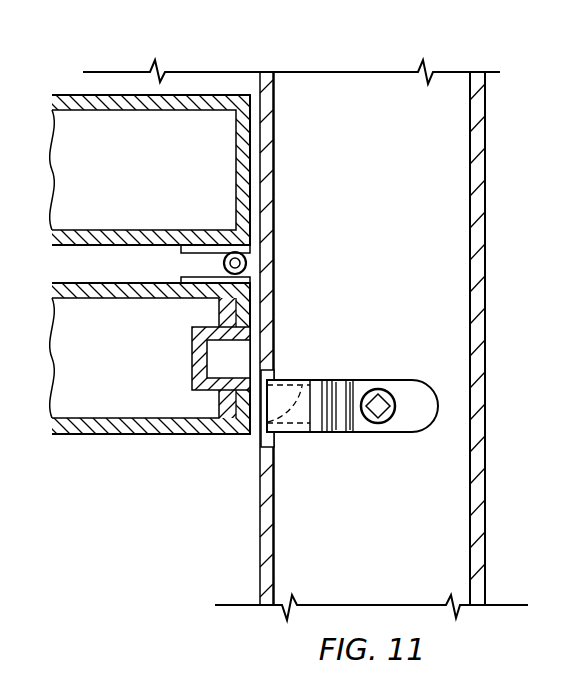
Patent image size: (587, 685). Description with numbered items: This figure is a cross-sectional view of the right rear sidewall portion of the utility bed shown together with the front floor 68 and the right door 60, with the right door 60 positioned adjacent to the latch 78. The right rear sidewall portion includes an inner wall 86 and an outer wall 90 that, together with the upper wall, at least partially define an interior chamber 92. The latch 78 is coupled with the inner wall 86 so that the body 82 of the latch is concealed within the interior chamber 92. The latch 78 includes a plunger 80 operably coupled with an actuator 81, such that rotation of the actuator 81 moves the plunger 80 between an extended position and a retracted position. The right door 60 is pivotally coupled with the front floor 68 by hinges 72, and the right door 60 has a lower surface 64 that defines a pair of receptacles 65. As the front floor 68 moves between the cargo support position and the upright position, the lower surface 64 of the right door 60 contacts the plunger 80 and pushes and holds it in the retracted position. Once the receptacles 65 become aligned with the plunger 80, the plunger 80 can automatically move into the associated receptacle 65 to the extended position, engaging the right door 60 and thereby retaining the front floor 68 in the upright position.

The right door 60 is at (150, 399).
The lower surface 64 is at (290, 426).
The receptacles 65 is at (218, 352).
The front floor 68 is at (68, 84).
The hinges 72 is at (247, 262).
The latch 78 is at (361, 412).
The plunger 80 is at (288, 394).
The actuator 81 is at (372, 424).
The body 82 is at (361, 395).
The inner wall 86 is at (276, 208).
The outer wall 90 is at (486, 370).
The interior chamber 92 is at (296, 532).